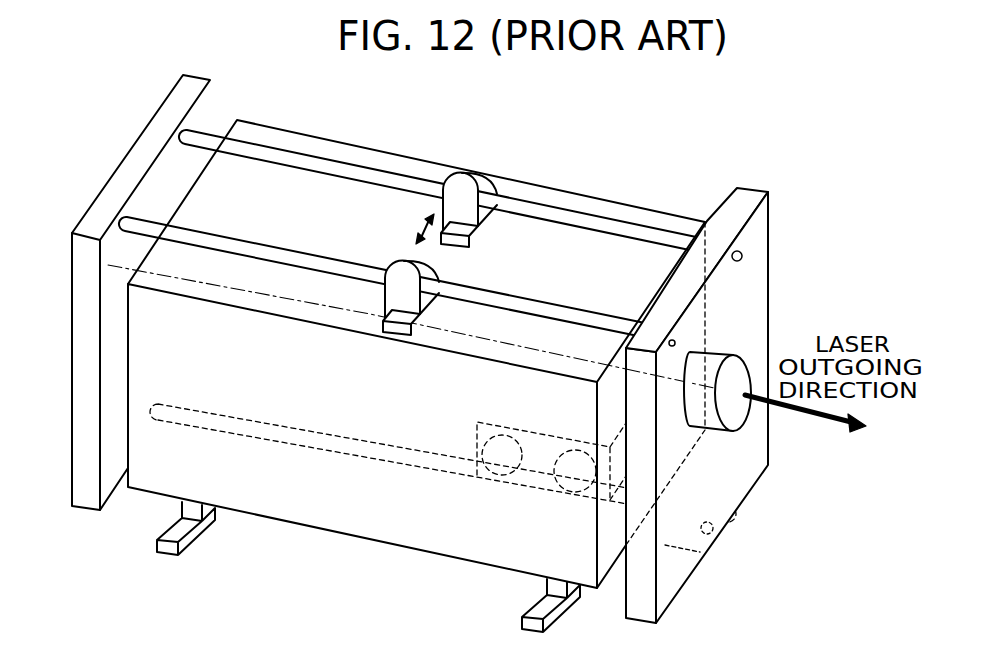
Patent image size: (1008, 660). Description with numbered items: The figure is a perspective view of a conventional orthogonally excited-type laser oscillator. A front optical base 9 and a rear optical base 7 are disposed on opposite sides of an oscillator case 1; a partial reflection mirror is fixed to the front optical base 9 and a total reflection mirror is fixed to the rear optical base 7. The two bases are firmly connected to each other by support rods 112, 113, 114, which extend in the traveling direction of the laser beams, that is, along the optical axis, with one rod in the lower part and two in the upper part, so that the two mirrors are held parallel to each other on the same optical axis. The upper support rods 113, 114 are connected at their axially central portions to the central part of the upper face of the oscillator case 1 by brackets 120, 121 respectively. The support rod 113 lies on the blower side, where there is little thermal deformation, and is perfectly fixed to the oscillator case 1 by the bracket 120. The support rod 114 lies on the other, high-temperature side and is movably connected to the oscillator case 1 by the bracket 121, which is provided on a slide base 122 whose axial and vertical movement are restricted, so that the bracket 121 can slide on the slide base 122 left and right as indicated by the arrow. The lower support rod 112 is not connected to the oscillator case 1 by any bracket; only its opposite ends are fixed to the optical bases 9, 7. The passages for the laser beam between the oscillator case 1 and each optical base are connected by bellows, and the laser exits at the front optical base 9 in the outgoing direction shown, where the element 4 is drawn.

The oscillator case 1 is at (687, 213).
The laser output lens 4 is at (704, 498).
The rear optical base 7 is at (72, 299).
The front optical base 9 is at (757, 283).
The support rod 112 is at (703, 552).
The support rod 113 is at (472, 298).
The support rod 114 is at (547, 206).
The bracket 120 is at (402, 268).
The bracket 121 is at (503, 192).
The slide base 122 is at (493, 213).